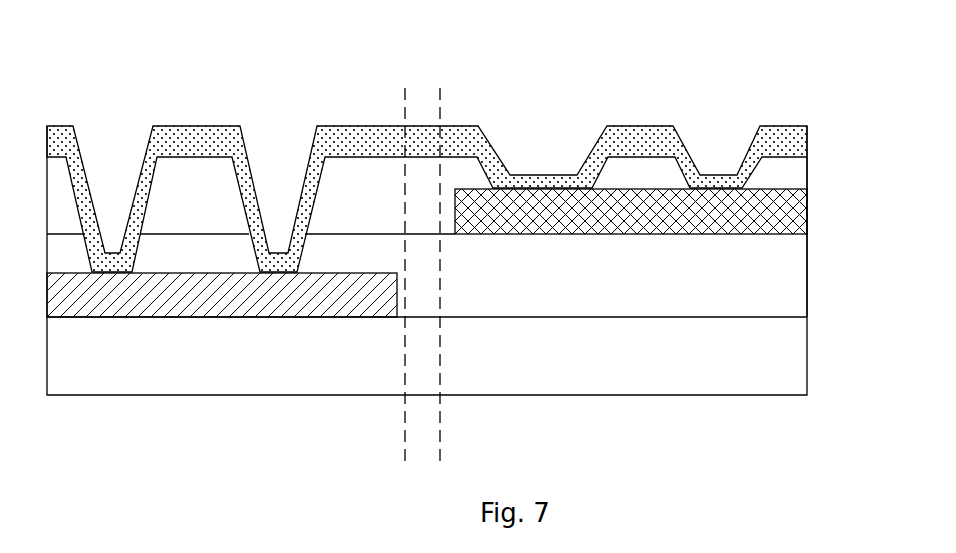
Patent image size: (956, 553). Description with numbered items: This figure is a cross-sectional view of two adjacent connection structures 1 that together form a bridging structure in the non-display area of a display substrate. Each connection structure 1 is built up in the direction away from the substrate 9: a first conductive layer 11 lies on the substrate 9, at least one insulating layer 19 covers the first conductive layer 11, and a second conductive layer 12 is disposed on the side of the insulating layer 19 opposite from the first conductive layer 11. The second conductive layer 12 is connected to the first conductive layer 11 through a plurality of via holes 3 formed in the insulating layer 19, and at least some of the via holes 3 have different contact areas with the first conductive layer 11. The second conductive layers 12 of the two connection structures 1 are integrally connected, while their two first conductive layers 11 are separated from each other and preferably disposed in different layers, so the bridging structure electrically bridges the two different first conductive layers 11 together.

The connection structure 1 is at (427, 285).
The via holes 3 is at (116, 172).
The substrate 9 is at (770, 355).
The first conductive layer 11 is at (184, 285).
The second conductive layer 12 is at (788, 143).
The insulating layer 19 is at (785, 302).